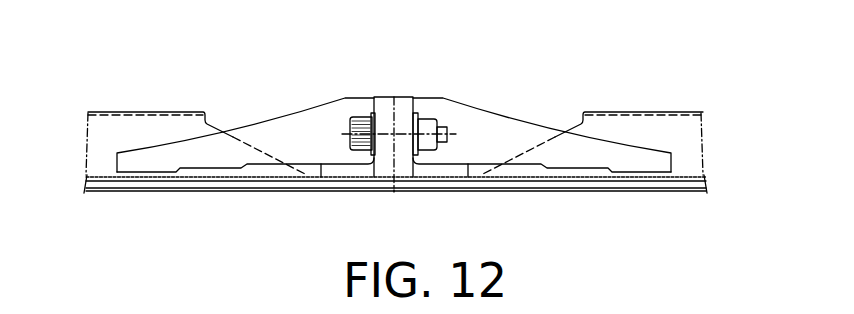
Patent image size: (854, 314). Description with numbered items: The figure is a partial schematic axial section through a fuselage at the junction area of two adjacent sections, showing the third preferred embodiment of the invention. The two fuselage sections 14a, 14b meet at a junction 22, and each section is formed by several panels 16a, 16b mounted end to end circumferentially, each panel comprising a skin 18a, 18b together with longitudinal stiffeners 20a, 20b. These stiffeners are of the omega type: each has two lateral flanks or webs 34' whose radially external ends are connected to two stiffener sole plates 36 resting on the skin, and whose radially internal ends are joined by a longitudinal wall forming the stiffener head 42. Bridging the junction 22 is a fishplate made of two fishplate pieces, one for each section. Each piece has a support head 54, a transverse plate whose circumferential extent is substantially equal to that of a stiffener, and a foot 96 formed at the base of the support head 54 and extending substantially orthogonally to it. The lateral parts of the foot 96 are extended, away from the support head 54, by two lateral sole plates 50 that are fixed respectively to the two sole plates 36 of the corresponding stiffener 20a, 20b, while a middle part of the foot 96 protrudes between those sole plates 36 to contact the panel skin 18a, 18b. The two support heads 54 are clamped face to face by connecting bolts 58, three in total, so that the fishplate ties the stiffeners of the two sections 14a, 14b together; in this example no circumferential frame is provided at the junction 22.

The longitudinal stiffener 20a is at (108, 105).
The longitudinal stiffener 20b is at (682, 106).
The lateral flank or web 34' is at (145, 91).
The stiffener head 42 is at (630, 126).
The lateral sole plate 50 is at (268, 170).
The support head 54 is at (362, 102).
The connecting bolt 58 is at (430, 116).
The junction 22 is at (394, 194).
The foot 96 is at (353, 172).
The stiffener sole plate 36 is at (218, 185).
The panel 16a is at (172, 196).
The panel 16b is at (618, 196).
The fuselage section 14a is at (128, 205).
The fuselage section 14b is at (663, 205).
The skin 18a is at (277, 184).
The skin 18b is at (512, 184).